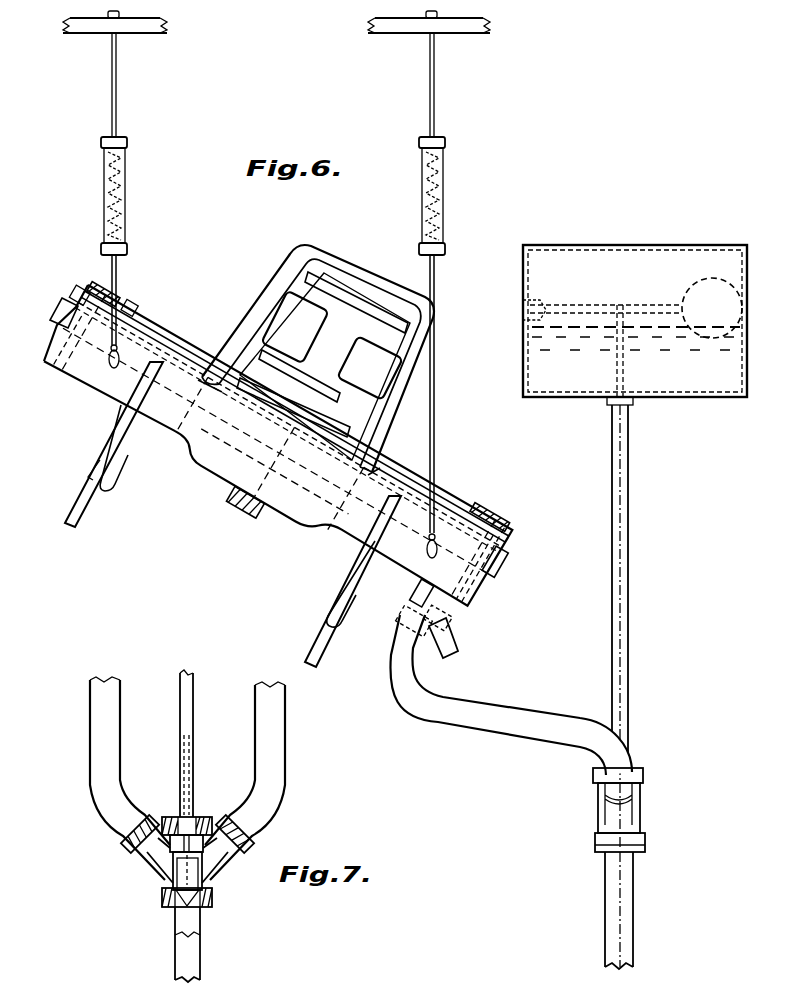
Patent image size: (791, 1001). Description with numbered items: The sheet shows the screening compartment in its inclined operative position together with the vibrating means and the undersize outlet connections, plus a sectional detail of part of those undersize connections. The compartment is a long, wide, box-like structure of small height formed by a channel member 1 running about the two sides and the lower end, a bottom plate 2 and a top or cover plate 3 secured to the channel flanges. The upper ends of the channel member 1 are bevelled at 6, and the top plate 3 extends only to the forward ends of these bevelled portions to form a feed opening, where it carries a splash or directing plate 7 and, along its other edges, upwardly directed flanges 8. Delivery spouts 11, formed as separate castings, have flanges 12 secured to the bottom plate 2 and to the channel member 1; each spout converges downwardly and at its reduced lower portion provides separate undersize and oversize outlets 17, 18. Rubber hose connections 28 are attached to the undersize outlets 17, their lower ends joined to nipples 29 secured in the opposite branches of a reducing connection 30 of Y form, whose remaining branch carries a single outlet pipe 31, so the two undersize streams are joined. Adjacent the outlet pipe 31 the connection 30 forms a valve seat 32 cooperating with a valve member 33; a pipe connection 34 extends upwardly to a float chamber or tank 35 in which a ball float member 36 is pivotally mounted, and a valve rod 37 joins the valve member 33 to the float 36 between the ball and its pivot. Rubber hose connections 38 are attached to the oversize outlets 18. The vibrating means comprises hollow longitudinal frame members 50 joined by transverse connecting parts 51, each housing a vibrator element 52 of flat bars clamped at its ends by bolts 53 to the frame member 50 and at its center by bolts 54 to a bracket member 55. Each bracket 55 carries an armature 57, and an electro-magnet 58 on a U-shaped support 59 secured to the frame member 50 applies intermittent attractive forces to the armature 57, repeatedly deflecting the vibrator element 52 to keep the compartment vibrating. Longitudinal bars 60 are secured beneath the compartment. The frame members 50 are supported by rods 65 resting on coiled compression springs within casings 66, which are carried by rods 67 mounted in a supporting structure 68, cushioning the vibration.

In FIG. 6, the channel member 1 is at (149, 338).
In FIG. 6, the bottom plate 2 is at (275, 451).
In FIG. 6, the top or cover plate 3 is at (403, 478).
In FIG. 6, the cut away or bevelled portions 6 is at (75, 298).
In FIG. 6, the splash or directing plate 7 is at (133, 306).
In FIG. 6, the upwardly directed flanges 8 is at (196, 353).
In FIG. 6, the delivery spout 11 is at (423, 590).
In FIG. 6, the flanges 12 is at (500, 561).
In FIG. 6, the undersize outlet 17 is at (396, 622).
In FIG. 6, the oversize outlet 18 is at (452, 621).
In FIG. 6, the rubber hose connections 28 is at (490, 728).
In FIG. 7, the rubber hose connections 28 is at (92, 738).
In FIG. 7, the nipples 29 is at (226, 816).
In FIG. 6, the reducing connection 30 is at (640, 812).
In FIG. 7, the reducing connection 30 is at (160, 864).
In FIG. 6, the outlet pipe 31 is at (608, 915).
In FIG. 7, the outlet pipe 31 is at (200, 956).
In FIG. 7, the valve seat 32 is at (165, 908).
In FIG. 7, the valve member 33 is at (196, 875).
In FIG. 6, the pipe connection 34 is at (628, 568).
In FIG. 7, the pipe connection 34 is at (180, 762).
In FIG. 6, the float chamber or tank 35 is at (608, 258).
In FIG. 6, the ball float member 36 is at (688, 301).
In FIG. 6, the valve rod 37 is at (632, 386).
In FIG. 7, the valve rod 37 is at (172, 818).
In FIG. 6, the rubber hose connections 38 is at (460, 651).
In FIG. 6, the hollow longitudinal frame members 50 is at (83, 383).
In FIG. 6, the transverse connecting parts 51 is at (95, 463).
In FIG. 6, the vibrator element 52 is at (55, 340).
In FIG. 6, the bolts 53 is at (98, 288).
In FIG. 6, the bolts 54 is at (235, 507).
In FIG. 6, the bracket member 55 is at (193, 471).
In FIG. 6, the armature 57 is at (380, 420).
In FIG. 6, the electro-magnet 58 is at (314, 333).
In FIG. 6, the U-shaped support 59 is at (272, 287).
In FIG. 6, the longitudinally extending members or bars 60 is at (52, 317).
In FIG. 6, the rods 65 is at (118, 278).
In FIG. 6, the casings 66 is at (129, 200).
In FIG. 6, the rods 67 is at (117, 106).
In FIG. 6, the supporting structure 68 is at (87, 34).